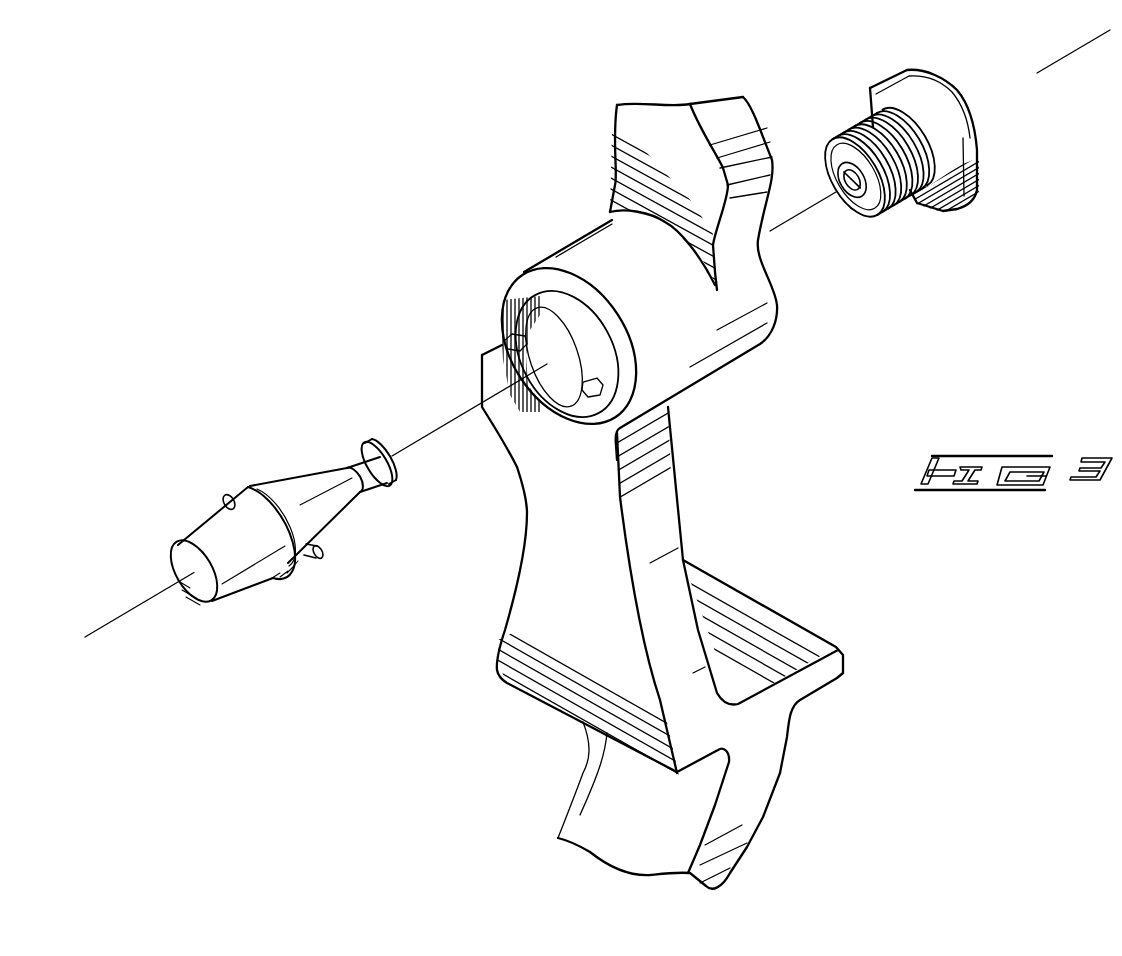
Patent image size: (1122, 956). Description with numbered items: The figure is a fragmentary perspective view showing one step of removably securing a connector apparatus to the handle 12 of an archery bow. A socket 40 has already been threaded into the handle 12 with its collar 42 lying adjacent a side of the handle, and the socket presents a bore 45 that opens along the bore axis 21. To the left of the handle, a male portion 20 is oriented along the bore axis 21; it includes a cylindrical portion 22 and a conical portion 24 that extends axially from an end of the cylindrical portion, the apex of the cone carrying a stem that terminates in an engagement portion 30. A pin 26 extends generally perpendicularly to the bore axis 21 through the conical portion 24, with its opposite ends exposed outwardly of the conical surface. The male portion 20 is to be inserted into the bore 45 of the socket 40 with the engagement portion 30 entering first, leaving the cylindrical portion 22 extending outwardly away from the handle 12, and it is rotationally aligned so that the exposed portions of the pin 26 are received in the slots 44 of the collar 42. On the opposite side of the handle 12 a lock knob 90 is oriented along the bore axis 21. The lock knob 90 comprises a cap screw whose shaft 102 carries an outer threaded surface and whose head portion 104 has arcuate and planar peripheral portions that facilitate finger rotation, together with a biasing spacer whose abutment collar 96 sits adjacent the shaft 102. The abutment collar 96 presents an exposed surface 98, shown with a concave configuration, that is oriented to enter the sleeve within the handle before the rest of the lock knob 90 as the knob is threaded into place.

The handle 12 is at (645, 493).
The male portion 20 is at (271, 536).
The bore axis 21 is at (130, 613).
The cylindrical portion 22 is at (224, 546).
The conical portion 24 is at (301, 494).
The pin 26 is at (231, 494).
The engagement portion 30 is at (370, 442).
The socket 40 is at (533, 290).
The collar 42 is at (593, 343).
The slots 44 is at (505, 340).
The bore 45 is at (558, 387).
The lock knob 90 is at (920, 193).
The abutment collar 96 is at (842, 214).
The exposed surface 98 is at (830, 187).
The shaft 102 is at (890, 117).
The head portion 104 is at (953, 100).